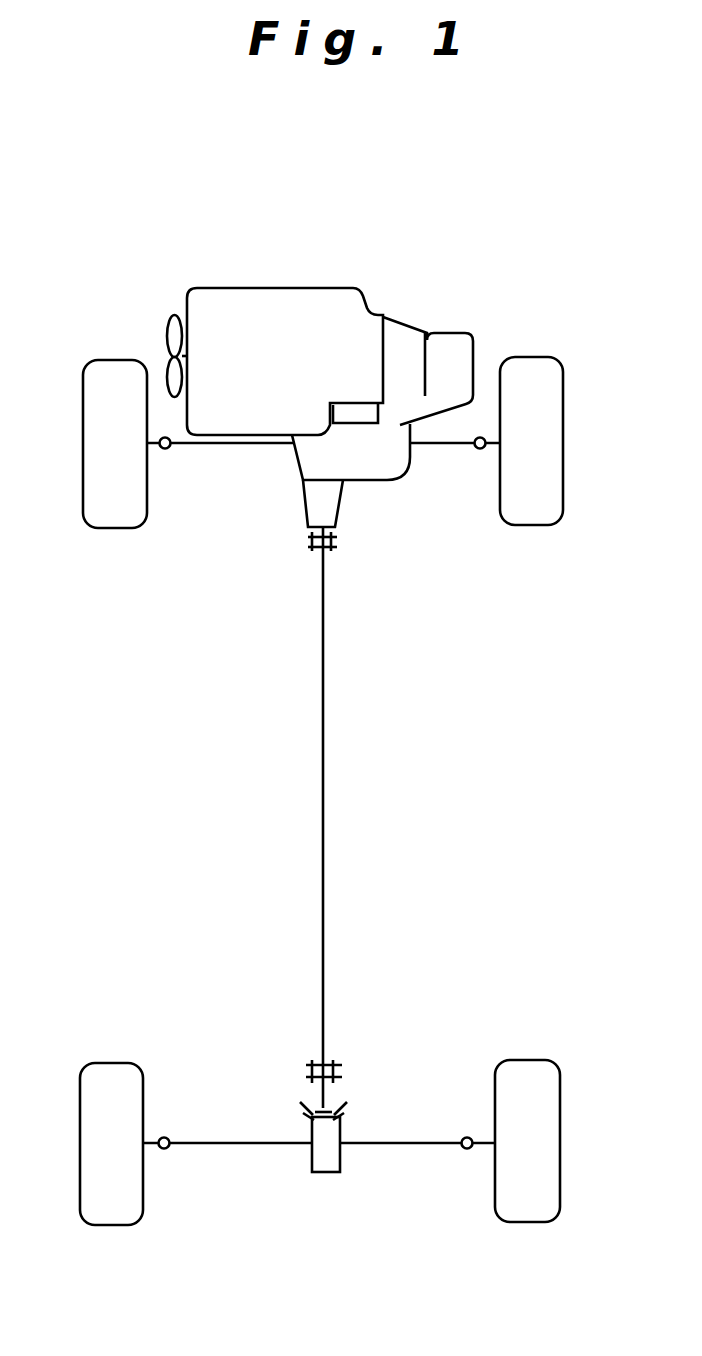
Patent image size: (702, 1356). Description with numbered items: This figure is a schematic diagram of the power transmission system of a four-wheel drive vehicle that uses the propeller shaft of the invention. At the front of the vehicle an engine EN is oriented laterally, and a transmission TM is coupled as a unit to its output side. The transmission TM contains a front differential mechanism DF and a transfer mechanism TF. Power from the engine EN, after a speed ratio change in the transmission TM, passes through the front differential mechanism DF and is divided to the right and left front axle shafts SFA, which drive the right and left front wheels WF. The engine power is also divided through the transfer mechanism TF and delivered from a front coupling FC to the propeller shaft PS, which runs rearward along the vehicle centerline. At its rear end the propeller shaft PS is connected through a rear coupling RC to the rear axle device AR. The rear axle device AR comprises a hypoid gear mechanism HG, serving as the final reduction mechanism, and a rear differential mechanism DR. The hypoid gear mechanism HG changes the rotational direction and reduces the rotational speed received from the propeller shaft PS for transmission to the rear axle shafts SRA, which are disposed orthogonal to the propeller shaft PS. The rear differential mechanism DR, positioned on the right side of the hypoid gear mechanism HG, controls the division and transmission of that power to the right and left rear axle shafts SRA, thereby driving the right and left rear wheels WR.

The engine EN is at (267, 300).
The transmission TM is at (443, 352).
The front wheels WF is at (110, 528).
The front axle shafts SFA is at (213, 447).
The transfer mechanism TF is at (312, 507).
The front differential mechanism DF is at (372, 467).
The front coupling FC is at (312, 550).
The propeller shaft PS is at (323, 757).
The rear axle device AR is at (277, 1078).
The rear coupling RC is at (334, 1065).
The hypoid gear mechanism HG is at (313, 1175).
The rear differential mechanism DR is at (328, 1162).
The rear axle shafts SRA is at (190, 1143).
The rear wheels WR is at (112, 1213).